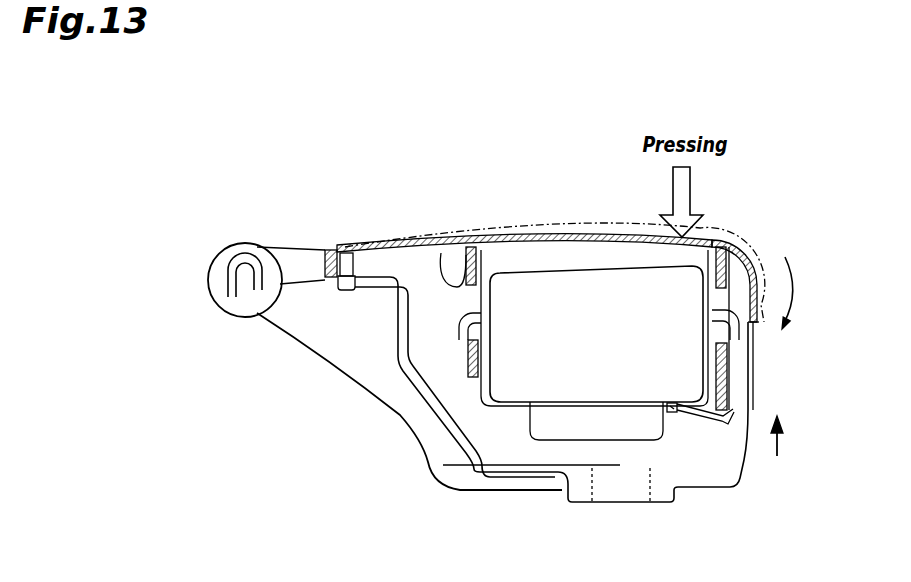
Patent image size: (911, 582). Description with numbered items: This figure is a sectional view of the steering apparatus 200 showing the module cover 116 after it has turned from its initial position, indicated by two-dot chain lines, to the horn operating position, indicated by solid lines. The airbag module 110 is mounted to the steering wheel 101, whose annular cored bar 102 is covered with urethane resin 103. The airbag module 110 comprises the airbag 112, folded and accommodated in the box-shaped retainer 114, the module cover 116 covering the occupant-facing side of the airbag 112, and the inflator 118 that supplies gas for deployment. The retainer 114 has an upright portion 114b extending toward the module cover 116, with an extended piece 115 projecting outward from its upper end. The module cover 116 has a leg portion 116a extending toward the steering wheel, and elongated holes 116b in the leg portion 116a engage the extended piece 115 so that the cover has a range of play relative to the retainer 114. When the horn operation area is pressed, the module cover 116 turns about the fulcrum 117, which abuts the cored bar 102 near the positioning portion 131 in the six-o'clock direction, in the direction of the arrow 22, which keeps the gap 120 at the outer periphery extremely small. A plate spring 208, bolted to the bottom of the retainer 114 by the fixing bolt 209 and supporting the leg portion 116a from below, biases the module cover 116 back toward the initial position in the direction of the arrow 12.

The arrow 12 is at (793, 436).
The arrow 22 is at (806, 293).
The steering wheel 101 is at (230, 243).
The cored bar 102 is at (282, 287).
The urethane resin 103 is at (243, 303).
The airbag module 110 is at (517, 237).
The airbag 112 is at (512, 372).
The retainer 114 is at (485, 372).
The upright portion 114b is at (488, 408).
The extended piece 115 is at (457, 335).
The module cover 116 is at (684, 236).
The leg portion 116a is at (468, 250).
The elongated hole 116b is at (440, 255).
The fulcrum 117 is at (331, 250).
The inflator 118 is at (553, 425).
The gap 120 is at (323, 247).
The positioning portion 131 is at (363, 268).
The steering apparatus 200 is at (572, 207).
The plate spring 208 is at (723, 423).
The fixing bolt 209 is at (672, 413).